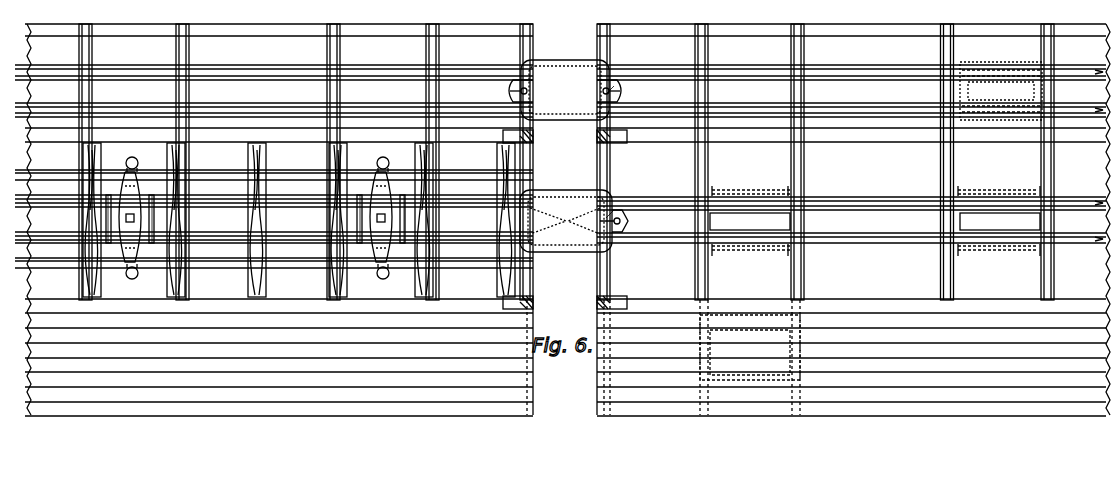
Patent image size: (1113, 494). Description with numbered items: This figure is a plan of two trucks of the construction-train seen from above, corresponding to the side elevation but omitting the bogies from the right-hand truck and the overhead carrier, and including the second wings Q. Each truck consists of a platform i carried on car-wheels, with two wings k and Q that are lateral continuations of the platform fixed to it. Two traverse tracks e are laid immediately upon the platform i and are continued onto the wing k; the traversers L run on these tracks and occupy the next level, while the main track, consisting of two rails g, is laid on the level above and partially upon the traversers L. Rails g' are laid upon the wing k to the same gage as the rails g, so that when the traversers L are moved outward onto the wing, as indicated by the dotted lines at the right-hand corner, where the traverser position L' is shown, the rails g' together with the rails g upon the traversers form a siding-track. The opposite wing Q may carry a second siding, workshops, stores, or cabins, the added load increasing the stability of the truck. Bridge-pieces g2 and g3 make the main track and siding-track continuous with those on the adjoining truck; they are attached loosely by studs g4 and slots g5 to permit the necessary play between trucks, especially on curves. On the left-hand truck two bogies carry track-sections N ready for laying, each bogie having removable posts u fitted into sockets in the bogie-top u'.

The wing k is at (246, 28).
The traverse track e is at (175, 78).
The rail g' is at (560, 91).
The rail g is at (560, 224).
The platform i is at (438, 207).
The track-section N is at (217, 176).
The bogie-top u' is at (255, 218).
The removable post u is at (263, 218).
The wing Q is at (565, 357).
The traverser L is at (876, 159).
The lower panel L' is at (750, 357).
The bridge-piece g2 is at (558, 250).
The bridge-piece g3 is at (565, 90).
The stud g4 is at (610, 88).
The slot g5 is at (603, 107).